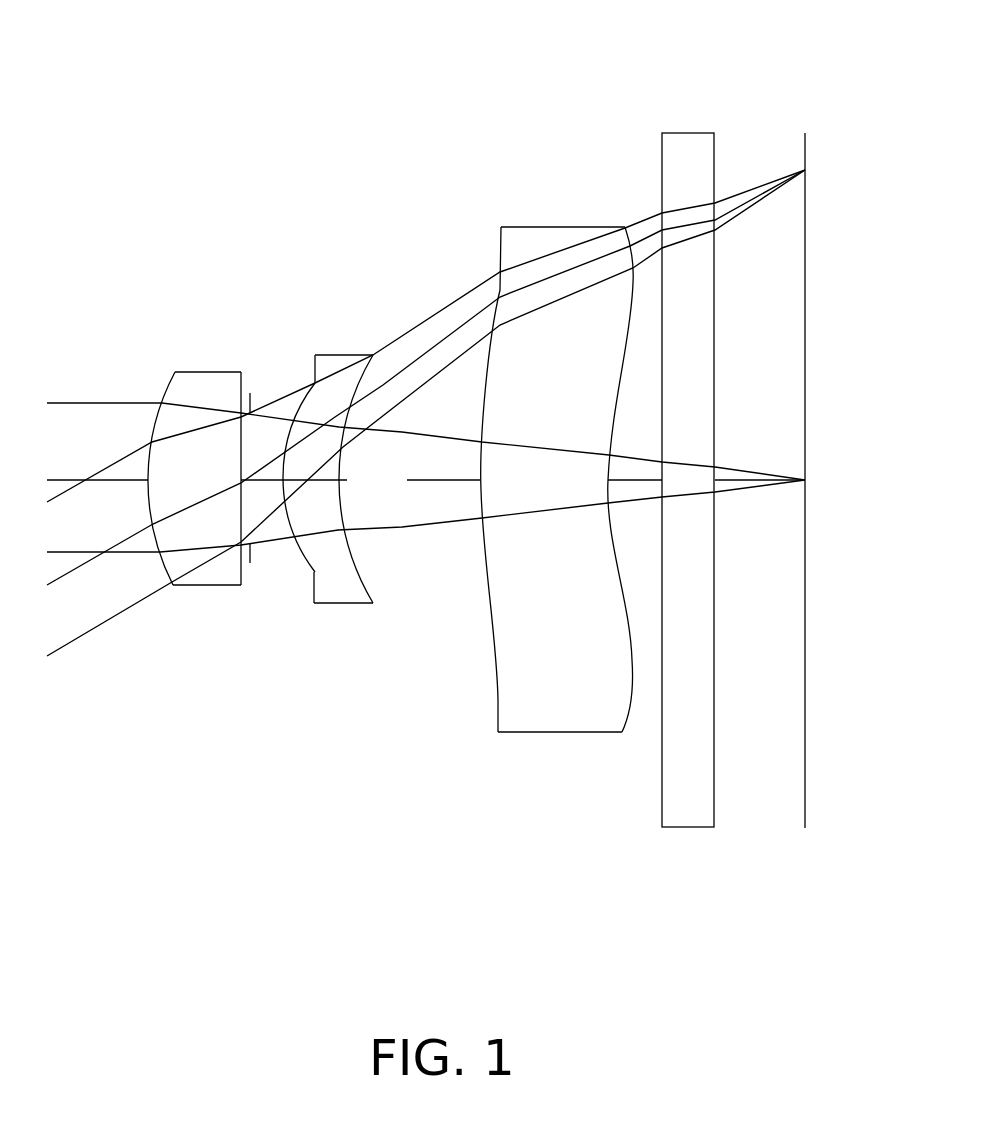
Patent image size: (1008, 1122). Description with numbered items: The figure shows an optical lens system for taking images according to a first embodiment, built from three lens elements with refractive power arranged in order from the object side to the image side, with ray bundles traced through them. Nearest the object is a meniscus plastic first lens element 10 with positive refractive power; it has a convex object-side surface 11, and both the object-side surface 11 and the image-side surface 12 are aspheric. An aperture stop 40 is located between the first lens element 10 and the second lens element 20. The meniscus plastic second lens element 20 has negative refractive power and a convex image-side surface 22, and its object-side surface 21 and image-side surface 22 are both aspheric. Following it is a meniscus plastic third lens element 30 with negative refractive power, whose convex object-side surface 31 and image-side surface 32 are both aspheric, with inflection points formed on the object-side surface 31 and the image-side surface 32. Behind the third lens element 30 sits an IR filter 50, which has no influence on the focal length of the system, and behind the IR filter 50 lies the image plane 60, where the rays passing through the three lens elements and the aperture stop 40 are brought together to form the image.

The first lens element 10 is at (197, 459).
The object-side surface of first lens element 11 is at (150, 578).
The image-side surface of first lens element 12 is at (250, 583).
The second lens element 20 is at (373, 459).
The object-side surface of second lens element 21 is at (324, 575).
The image-side surface of second lens element 22 is at (387, 602).
The third lens element 30 is at (559, 494).
The object-side surface of third lens element 31 is at (487, 709).
The image-side surface of third lens element 32 is at (632, 735).
The aperture stop 40 is at (260, 388).
The IR filter 50 is at (688, 120).
The image plane 60 is at (815, 142).